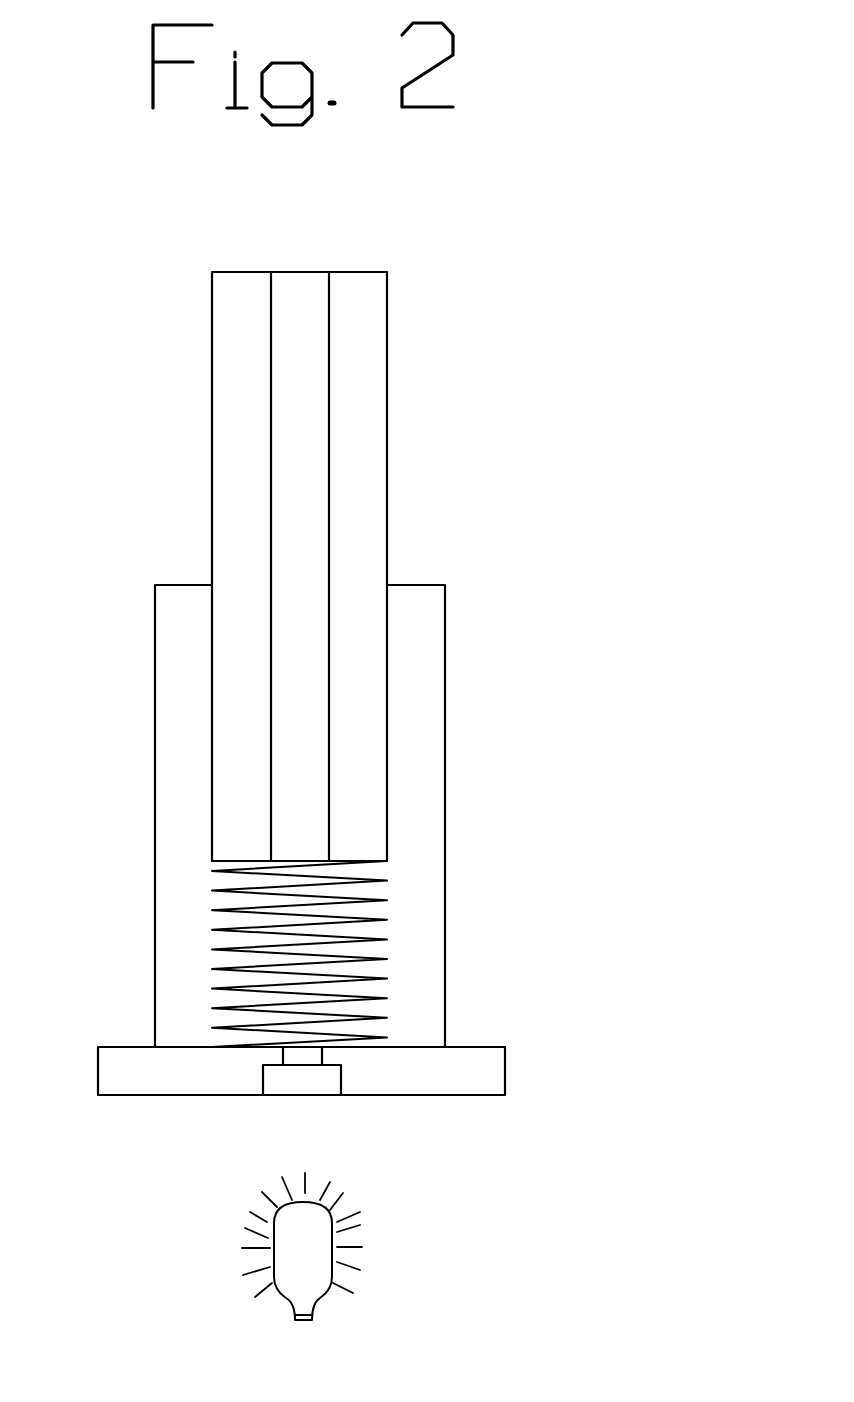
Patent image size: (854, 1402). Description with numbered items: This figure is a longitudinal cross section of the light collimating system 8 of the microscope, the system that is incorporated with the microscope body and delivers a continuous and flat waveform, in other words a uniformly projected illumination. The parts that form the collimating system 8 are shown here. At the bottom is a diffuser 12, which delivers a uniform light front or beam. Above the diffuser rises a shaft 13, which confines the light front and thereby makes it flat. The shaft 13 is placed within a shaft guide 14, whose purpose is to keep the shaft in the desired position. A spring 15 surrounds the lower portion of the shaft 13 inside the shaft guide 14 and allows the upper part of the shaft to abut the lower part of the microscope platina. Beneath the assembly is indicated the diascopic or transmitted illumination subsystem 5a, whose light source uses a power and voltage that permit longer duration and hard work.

The collimating system 8 is at (402, 373).
The shaft 13 is at (237, 430).
The shaft guide 14 is at (178, 935).
The spring 15 is at (387, 899).
The diffuser 12 is at (478, 1187).
The diascopic or transmitted illumination subsystem 5a is at (273, 1267).